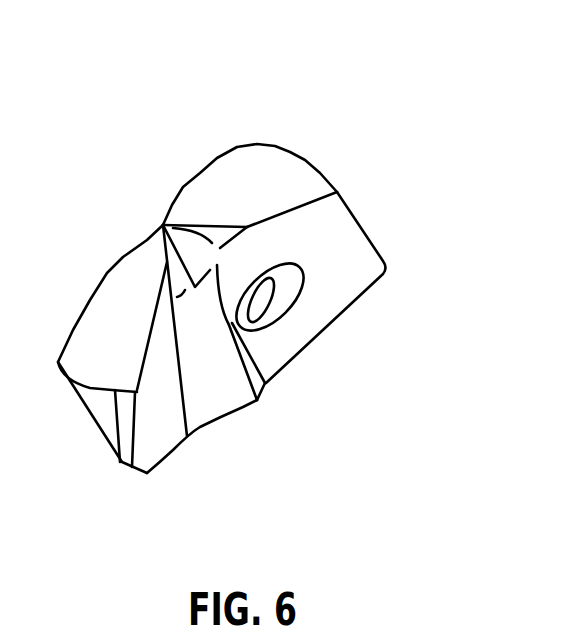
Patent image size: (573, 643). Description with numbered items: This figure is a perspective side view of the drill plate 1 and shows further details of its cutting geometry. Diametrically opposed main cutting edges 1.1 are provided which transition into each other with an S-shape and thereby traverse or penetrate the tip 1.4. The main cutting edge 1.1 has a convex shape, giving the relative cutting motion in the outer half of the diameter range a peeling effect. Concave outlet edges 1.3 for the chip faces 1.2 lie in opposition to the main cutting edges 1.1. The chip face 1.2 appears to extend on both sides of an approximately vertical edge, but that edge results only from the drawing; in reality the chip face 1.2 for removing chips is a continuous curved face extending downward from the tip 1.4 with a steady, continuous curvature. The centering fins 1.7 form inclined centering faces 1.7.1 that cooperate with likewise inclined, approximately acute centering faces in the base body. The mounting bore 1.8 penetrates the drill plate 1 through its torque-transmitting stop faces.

The drill plate 1 is at (330, 233).
The main cutting edge 1.1 is at (200, 173).
The chip face 1.2 is at (202, 363).
The outlet edge 1.3 is at (210, 423).
The tip 1.4 is at (179, 162).
The centering fin 1.7 is at (265, 388).
The centering face 1.7.1 is at (252, 370).
The mounting bore 1.8 is at (253, 298).